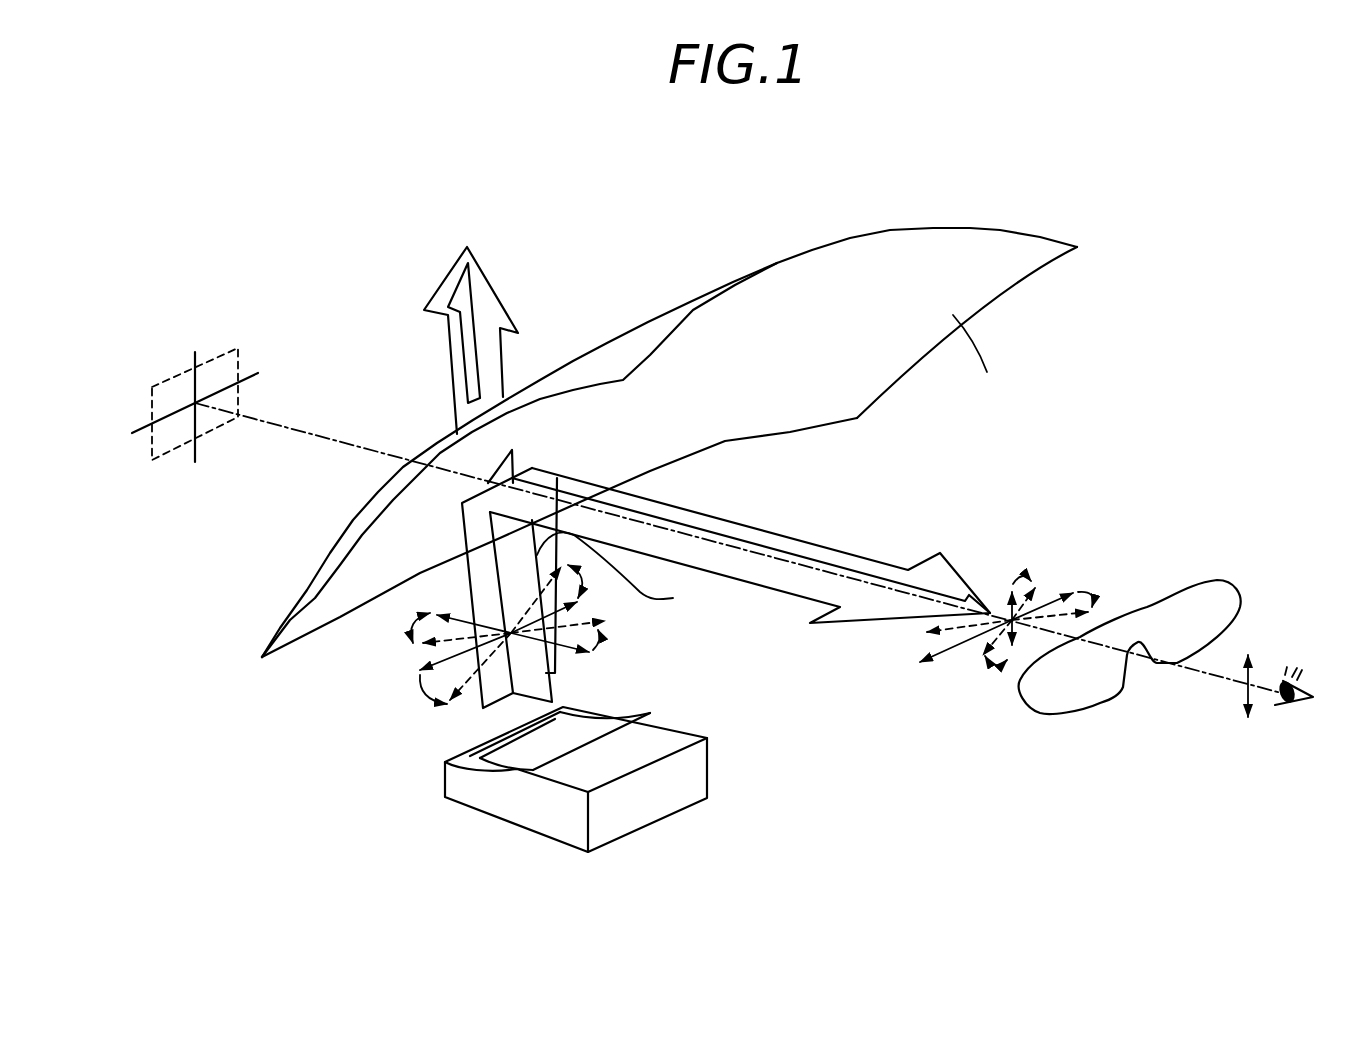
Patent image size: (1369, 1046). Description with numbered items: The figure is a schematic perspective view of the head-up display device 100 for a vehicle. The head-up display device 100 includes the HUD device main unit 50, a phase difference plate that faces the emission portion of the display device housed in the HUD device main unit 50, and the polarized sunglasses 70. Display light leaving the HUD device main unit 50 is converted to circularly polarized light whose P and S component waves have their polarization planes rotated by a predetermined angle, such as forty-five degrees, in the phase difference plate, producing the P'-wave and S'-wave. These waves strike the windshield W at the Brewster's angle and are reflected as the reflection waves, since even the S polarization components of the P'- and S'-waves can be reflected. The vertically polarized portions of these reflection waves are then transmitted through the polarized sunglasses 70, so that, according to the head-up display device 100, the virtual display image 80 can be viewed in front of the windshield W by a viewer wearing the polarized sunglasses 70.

The head-up display device 100 is at (1127, 195).
The virtual display image 80 is at (170, 378).
The HUD device main unit 50 is at (635, 818).
The polarized sunglasses 70 is at (1050, 707).